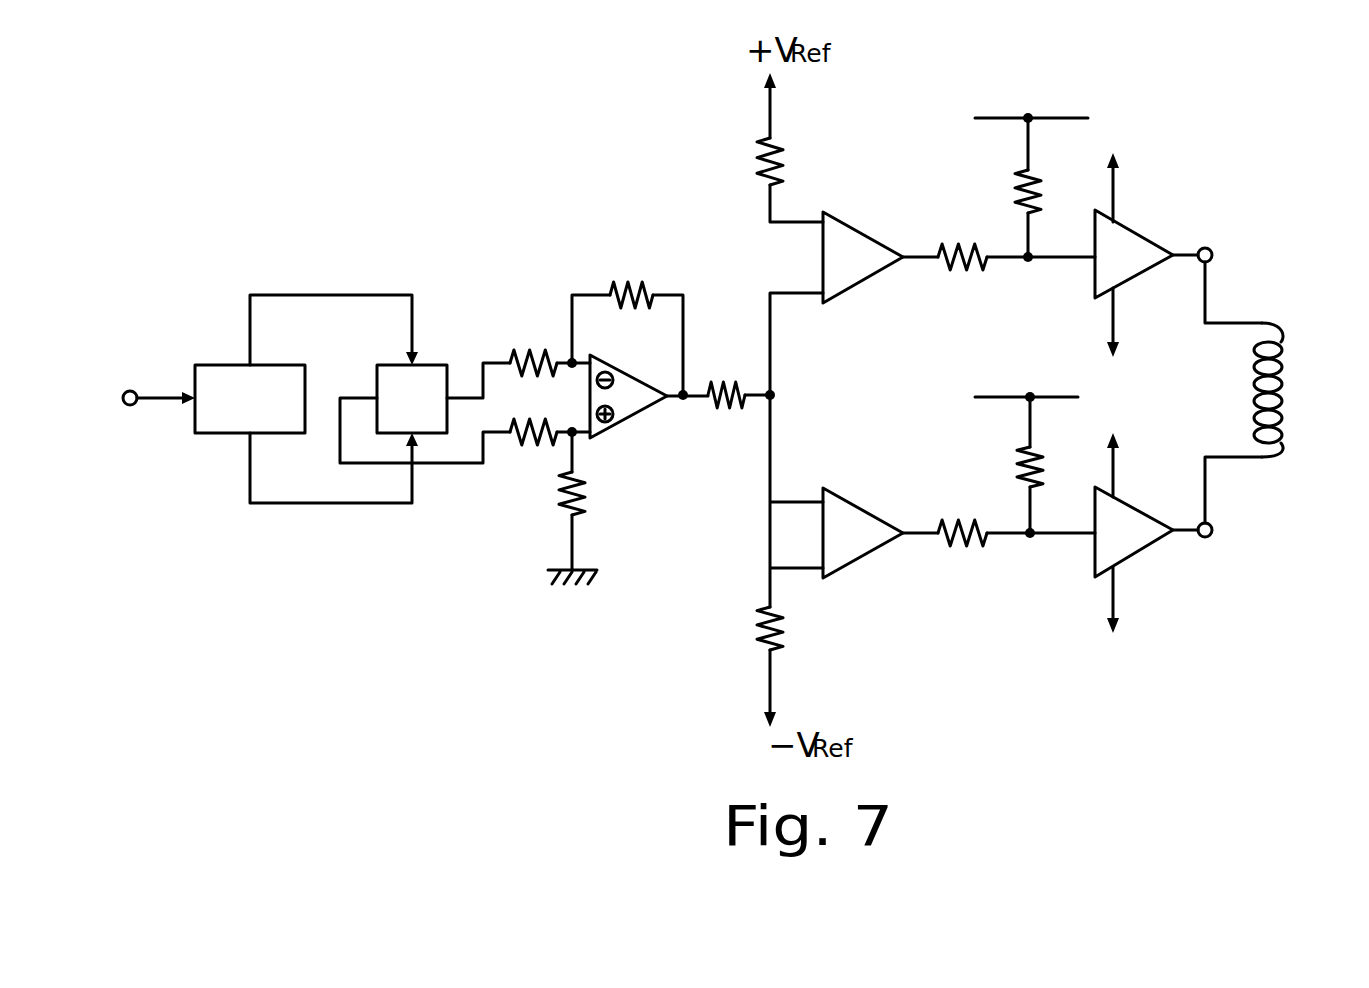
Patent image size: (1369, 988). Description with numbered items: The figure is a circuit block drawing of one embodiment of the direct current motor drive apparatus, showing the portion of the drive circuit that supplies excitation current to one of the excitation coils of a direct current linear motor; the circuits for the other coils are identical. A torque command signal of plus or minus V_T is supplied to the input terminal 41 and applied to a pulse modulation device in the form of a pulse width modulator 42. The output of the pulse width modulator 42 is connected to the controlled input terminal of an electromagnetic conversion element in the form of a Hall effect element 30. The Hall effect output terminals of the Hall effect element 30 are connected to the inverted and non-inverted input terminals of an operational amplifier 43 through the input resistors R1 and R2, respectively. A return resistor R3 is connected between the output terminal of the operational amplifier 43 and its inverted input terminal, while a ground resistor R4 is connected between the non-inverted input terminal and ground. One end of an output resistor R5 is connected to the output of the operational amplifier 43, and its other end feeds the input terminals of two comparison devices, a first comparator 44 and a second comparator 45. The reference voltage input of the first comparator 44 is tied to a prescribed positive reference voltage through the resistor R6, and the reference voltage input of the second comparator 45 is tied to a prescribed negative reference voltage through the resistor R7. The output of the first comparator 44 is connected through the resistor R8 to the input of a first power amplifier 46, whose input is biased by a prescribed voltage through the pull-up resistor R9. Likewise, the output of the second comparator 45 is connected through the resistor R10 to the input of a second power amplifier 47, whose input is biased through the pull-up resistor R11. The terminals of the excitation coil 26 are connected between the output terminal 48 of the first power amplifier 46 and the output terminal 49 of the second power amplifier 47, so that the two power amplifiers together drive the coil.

The input terminal 41 is at (131, 390).
The pulse width modulator 42 is at (212, 434).
The Hall effect element 30 is at (393, 364).
The operational amplifier 43 is at (643, 411).
The first comparator 44 is at (885, 272).
The second comparator 45 is at (877, 550).
The first power amplifier 46 is at (1142, 233).
The second power amplifier 47 is at (1127, 560).
The output terminal 48 is at (1212, 251).
The output terminal 49 is at (1212, 534).
The excitation coil 26 is at (1288, 380).
The input resistor R1 is at (538, 346).
The input resistor R2 is at (533, 447).
The return resistor R3 is at (640, 278).
The ground resistor R4 is at (590, 498).
The output resistor R5 is at (735, 387).
The resistor R6 is at (785, 167).
The resistor R7 is at (788, 622).
The resistor R8 is at (975, 240).
The pull-up resistor R9 is at (1020, 192).
The resistor R10 is at (963, 540).
The pull-up resistor R11 is at (1020, 462).